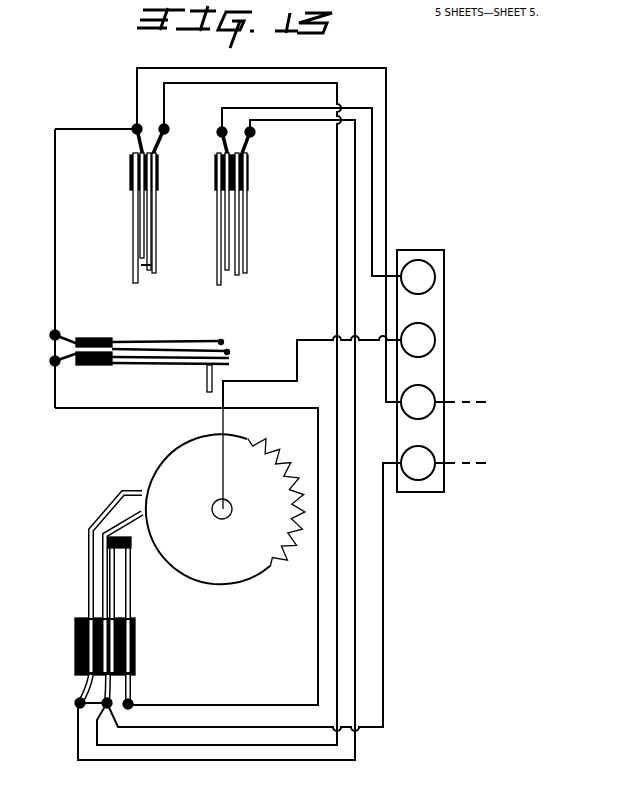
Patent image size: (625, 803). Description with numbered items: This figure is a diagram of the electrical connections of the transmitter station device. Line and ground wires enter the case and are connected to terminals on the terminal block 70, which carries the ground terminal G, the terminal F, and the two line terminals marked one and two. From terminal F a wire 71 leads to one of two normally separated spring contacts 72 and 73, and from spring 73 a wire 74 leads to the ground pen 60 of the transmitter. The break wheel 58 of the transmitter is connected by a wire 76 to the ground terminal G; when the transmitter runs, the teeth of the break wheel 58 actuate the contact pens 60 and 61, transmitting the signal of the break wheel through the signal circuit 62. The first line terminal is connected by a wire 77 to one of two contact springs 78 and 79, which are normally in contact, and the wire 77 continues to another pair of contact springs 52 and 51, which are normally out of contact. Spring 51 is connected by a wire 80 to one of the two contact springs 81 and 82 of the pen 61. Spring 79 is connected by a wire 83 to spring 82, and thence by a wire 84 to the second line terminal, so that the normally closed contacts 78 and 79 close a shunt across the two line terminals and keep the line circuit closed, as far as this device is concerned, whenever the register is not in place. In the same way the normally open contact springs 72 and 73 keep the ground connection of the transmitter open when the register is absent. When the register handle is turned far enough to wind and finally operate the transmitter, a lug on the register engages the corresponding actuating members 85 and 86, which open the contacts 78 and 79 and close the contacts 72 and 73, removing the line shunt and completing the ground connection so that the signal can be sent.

The contact spring 51 is at (178, 346).
The contact spring 52 is at (150, 340).
The break wheel 58 is at (225, 496).
The contact pen 60 is at (103, 596).
The contact pen 61 is at (100, 595).
The signal circuit 62 is at (458, 404).
The terminal block 70 is at (432, 312).
The wire 71 is at (372, 188).
The spring contact 72 is at (231, 208).
The spring contact 73 is at (248, 251).
The wire 74 is at (352, 247).
The wire 76 is at (253, 381).
The wire 77 is at (137, 99).
The contact spring 78 is at (141, 206).
The contact spring 79 is at (152, 247).
The wire 80 is at (131, 410).
The contact spring 81 is at (128, 600).
The contact spring 82 is at (120, 577).
The wire 83 is at (318, 629).
The wire 84 is at (383, 655).
The actuating member 85 is at (139, 243).
The actuating member 86 is at (218, 249).